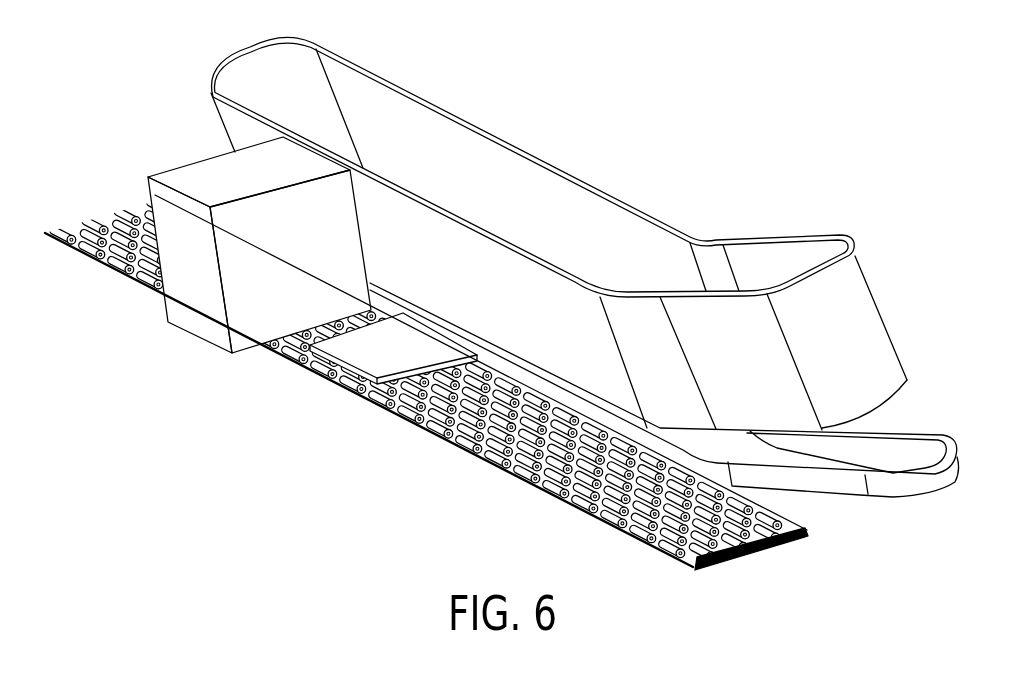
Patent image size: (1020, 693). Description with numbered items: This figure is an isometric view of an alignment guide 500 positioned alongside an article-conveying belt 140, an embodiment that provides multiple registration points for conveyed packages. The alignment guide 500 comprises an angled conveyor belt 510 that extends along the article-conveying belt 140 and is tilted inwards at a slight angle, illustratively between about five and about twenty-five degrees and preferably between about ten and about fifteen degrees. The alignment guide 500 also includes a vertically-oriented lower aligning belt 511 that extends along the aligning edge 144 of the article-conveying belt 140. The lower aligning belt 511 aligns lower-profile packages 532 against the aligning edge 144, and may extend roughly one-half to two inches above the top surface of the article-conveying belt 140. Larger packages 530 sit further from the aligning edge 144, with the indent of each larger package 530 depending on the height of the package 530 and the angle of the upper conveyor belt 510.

The alignment guide 500 is at (546, 307).
The angled conveyor belt 510 is at (250, 123).
The vertically-oriented lower aligning belt 511 is at (843, 485).
The larger package 530 is at (253, 273).
The lower-profile package 532 is at (377, 348).
The article-conveying belt 140 is at (427, 407).
The aligning edge 144 is at (777, 547).